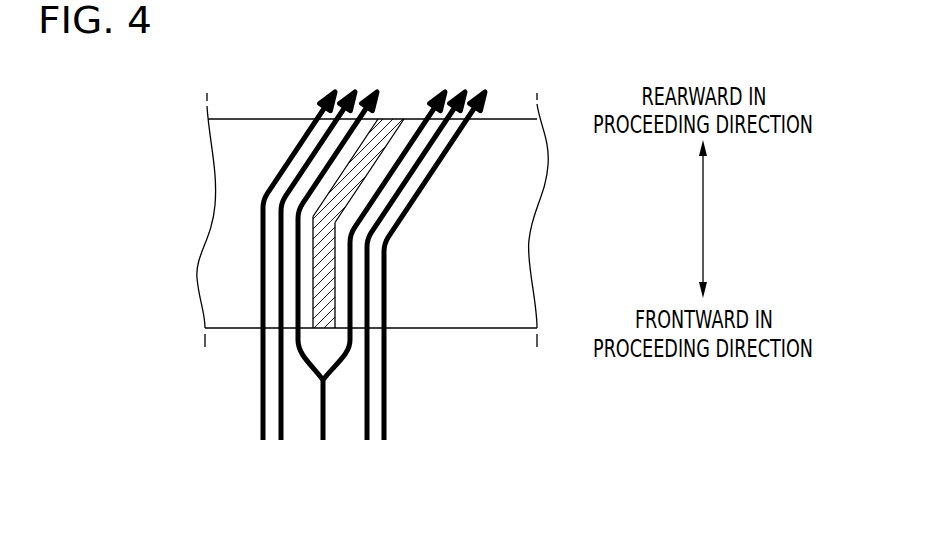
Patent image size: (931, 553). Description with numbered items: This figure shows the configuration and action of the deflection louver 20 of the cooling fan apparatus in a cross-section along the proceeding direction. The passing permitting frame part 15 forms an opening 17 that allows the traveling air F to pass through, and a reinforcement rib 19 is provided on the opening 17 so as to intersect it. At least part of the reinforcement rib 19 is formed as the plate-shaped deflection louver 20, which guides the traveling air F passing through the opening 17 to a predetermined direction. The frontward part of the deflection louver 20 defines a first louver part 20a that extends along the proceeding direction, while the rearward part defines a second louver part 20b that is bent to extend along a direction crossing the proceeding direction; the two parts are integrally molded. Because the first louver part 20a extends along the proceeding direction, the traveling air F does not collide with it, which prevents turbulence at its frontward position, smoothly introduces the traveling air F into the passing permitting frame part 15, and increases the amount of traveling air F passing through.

The passing permitting frame part 15 is at (452, 345).
The opening 17 is at (240, 308).
The reinforcement rib 19 is at (328, 207).
The deflection louver 20 is at (370, 201).
The first louver part 20a is at (335, 278).
The second louver part 20b is at (380, 158).
The traveling air F is at (392, 449).